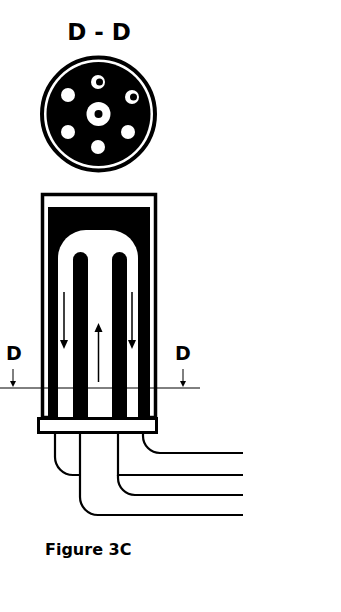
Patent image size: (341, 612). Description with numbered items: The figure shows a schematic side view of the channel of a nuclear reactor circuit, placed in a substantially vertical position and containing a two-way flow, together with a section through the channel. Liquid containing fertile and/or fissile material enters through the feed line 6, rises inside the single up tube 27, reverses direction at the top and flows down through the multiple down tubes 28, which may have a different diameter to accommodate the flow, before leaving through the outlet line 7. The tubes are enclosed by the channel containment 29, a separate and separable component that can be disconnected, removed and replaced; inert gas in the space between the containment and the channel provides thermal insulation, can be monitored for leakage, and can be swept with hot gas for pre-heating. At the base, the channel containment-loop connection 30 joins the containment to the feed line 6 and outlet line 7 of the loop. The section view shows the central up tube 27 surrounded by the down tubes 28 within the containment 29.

The feed line 6 is at (218, 506).
The outlet line 7 is at (218, 465).
The single up tube 27 is at (98, 114).
The multiple down tubes 28 is at (143, 77).
The channel containment 29 is at (153, 207).
The channel containment-loop connection 30 is at (155, 425).